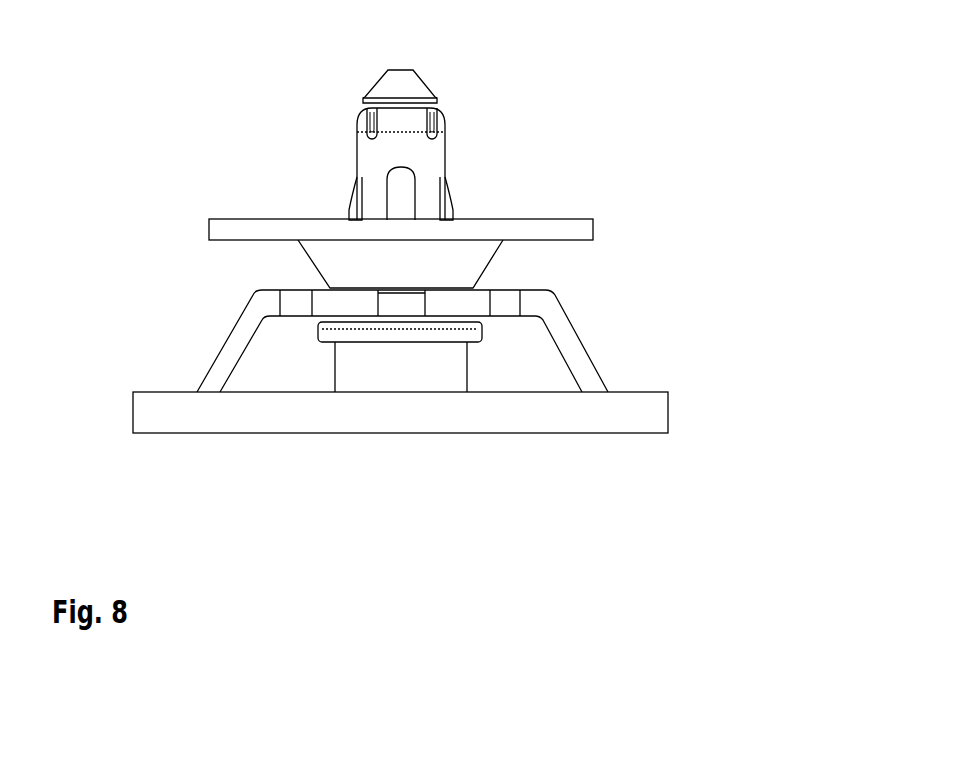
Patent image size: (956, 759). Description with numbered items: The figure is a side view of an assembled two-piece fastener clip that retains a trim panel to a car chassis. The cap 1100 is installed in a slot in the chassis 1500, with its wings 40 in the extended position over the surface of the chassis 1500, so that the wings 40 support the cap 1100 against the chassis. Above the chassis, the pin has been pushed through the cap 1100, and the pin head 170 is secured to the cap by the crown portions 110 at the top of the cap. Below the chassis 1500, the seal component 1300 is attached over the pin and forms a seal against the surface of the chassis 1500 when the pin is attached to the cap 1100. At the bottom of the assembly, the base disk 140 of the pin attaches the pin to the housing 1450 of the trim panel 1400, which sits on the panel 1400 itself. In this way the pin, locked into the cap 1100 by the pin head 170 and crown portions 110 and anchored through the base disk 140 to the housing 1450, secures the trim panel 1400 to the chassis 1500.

The pin head 170 is at (403, 82).
The crown portions 110 is at (401, 122).
The cap 1100 is at (435, 160).
The wings 40 is at (452, 203).
The chassis 1500 is at (507, 228).
The seal component 1300 is at (465, 255).
The housing 1450 is at (573, 355).
The base disk 140 is at (408, 328).
The panel 1400 is at (633, 420).